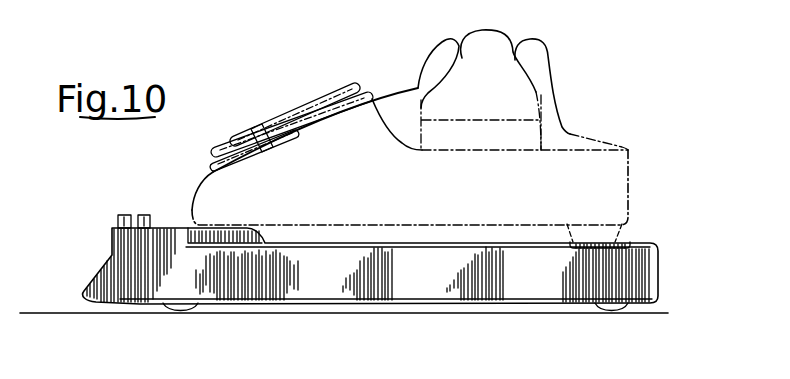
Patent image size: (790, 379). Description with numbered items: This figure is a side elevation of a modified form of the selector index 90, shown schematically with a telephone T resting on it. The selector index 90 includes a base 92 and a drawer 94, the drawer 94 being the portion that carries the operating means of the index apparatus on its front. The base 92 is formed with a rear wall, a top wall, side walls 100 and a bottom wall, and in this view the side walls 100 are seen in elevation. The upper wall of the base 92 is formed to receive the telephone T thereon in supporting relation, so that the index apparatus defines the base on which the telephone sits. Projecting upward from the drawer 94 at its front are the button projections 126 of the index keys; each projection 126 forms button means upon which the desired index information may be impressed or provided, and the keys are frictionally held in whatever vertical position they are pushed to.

The selector index 90 is at (656, 238).
The base 92 is at (422, 281).
The drawer 94 is at (93, 272).
The side walls 100 is at (547, 282).
The projection 126 is at (122, 213).
The telephone T is at (553, 87).